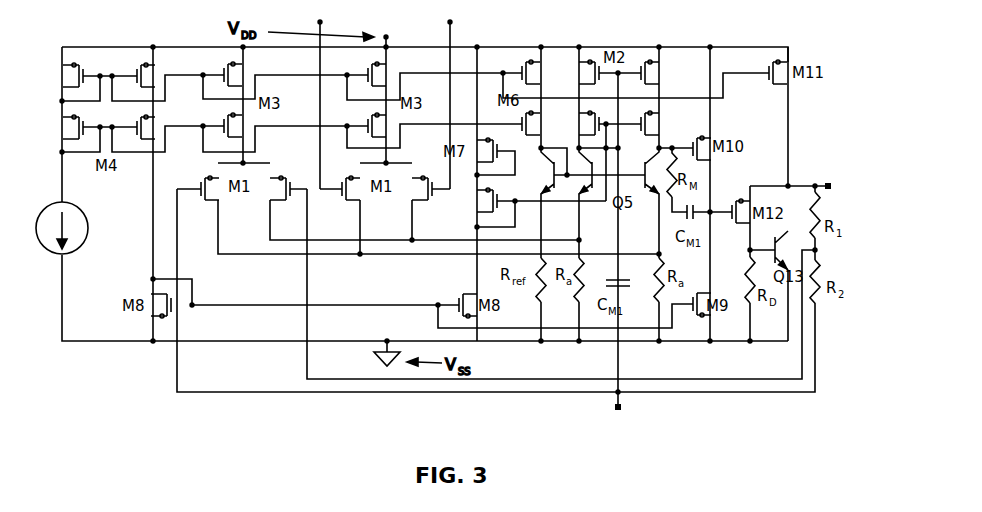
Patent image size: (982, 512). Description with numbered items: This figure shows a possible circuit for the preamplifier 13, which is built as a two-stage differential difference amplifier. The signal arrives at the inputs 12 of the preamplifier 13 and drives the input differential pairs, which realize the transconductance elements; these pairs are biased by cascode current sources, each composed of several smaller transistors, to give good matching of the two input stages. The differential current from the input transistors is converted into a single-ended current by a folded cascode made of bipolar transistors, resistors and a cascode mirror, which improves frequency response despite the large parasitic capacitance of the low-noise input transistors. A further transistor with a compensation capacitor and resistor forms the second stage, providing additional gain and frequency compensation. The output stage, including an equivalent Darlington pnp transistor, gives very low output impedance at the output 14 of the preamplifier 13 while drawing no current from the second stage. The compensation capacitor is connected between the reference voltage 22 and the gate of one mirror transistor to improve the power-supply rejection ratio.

The inputs 12 is at (325, 20).
The preamplifier stage 13 is at (805, 118).
The output 14 is at (829, 170).
The reference voltage 22 is at (610, 407).